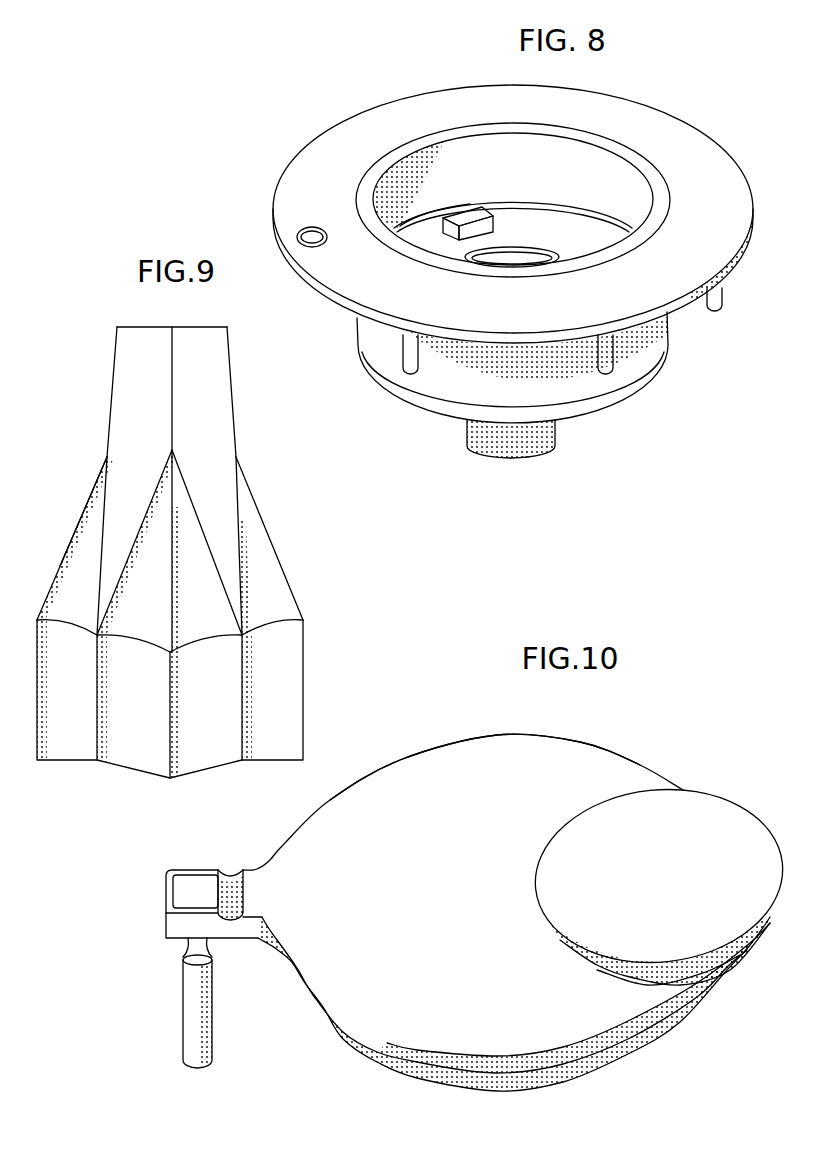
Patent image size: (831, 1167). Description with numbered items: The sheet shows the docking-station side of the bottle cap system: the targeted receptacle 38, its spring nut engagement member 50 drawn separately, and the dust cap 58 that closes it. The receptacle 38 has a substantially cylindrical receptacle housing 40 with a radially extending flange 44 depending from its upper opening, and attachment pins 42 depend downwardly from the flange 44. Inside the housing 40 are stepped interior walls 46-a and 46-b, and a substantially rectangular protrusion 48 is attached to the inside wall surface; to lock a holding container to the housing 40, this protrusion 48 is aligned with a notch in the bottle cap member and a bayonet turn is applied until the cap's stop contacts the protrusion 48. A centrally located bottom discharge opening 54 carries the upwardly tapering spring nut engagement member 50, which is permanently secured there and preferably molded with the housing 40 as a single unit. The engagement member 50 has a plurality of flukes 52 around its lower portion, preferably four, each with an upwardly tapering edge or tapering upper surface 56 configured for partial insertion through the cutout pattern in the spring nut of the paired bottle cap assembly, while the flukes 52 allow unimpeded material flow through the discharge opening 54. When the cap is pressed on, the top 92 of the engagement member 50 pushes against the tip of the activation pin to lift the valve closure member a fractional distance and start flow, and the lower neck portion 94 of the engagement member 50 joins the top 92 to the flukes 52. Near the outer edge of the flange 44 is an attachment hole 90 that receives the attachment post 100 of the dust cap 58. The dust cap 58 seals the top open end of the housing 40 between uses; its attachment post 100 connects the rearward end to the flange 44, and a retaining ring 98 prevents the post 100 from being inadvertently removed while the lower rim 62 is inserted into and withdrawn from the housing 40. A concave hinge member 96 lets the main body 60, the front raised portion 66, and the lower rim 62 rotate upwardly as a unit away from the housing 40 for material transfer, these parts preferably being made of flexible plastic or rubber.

In FIG. 8, the receptacle 38 is at (378, 58).
In FIG. 8, the receptacle housing 40 is at (450, 390).
In FIG. 8, the attachment pins 42 is at (720, 311).
In FIG. 8, the flange 44 is at (643, 293).
In FIG. 8, the stepped interior wall 46-a is at (430, 212).
In FIG. 8, the stepped interior wall 46-b is at (550, 255).
In FIG. 8, the rectangular protrusion 48 is at (475, 215).
In FIG. 9, the spring nut engagement member 50 is at (301, 535).
In FIG. 9, the flukes 52 is at (280, 687).
In FIG. 8, the discharge opening 54 is at (507, 466).
In FIG. 9, the tapering upper surface 56 is at (75, 518).
In FIG. 10, the dust cap 58 is at (716, 700).
In FIG. 10, the main body 60 is at (520, 755).
In FIG. 10, the lower rim 62 is at (522, 1078).
In FIG. 10, the raised portion 66 is at (683, 823).
In FIG. 8, the attachment hole 90 is at (302, 233).
In FIG. 9, the top of spring nut engagement member 92 is at (135, 322).
In FIG. 9, the neck 94 is at (117, 408).
In FIG. 10, the concave hinge member 96 is at (230, 888).
In FIG. 10, the retaining ring 98 is at (178, 963).
In FIG. 10, the attachment post 100 is at (198, 1020).